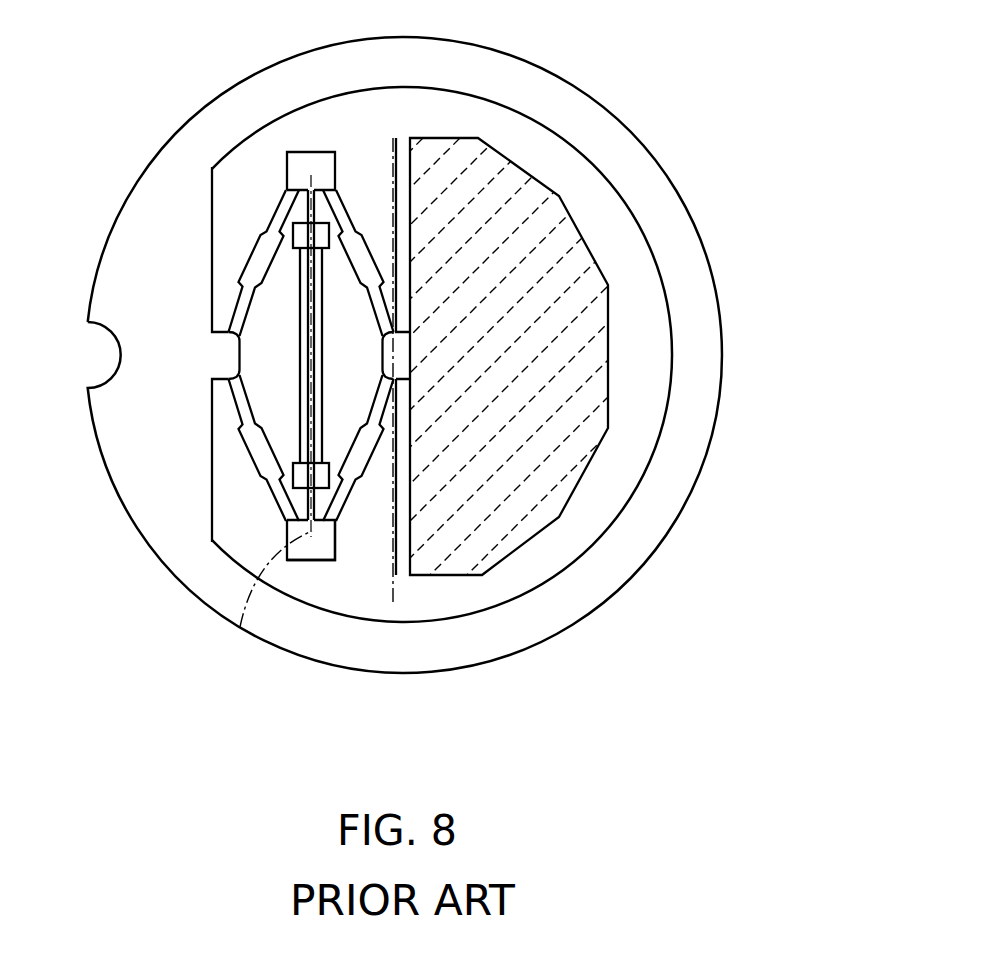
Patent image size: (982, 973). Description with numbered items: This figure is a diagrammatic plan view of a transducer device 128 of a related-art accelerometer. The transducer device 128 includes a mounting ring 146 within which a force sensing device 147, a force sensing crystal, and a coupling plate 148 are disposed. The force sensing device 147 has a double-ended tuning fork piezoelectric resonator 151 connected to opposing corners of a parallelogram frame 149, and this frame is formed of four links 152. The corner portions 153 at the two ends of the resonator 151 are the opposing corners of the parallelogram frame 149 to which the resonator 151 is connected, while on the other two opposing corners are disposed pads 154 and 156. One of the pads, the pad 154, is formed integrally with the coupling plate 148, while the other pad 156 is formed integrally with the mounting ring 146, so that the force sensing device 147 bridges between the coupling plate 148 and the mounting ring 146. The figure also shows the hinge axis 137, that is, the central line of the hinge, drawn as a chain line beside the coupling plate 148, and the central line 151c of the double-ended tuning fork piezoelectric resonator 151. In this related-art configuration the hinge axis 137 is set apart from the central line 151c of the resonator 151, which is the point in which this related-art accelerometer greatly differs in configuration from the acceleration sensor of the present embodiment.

The transducer device 128 is at (630, 112).
The mounting ring 146 is at (714, 330).
The force sensing device 147 is at (360, 178).
The coupling plate 148 is at (550, 462).
The parallelogram frame 149 is at (339, 571).
The double-ended tuning fork piezoelectric resonator 151 is at (300, 349).
The central line of the double-ended tuning fork piezoelectric resonator 151c is at (240, 627).
The links 152 is at (257, 265).
The end blocks 153 is at (310, 163).
The pad 154 is at (393, 362).
The pad 156 is at (214, 354).
The hinge axis 137 is at (397, 590).